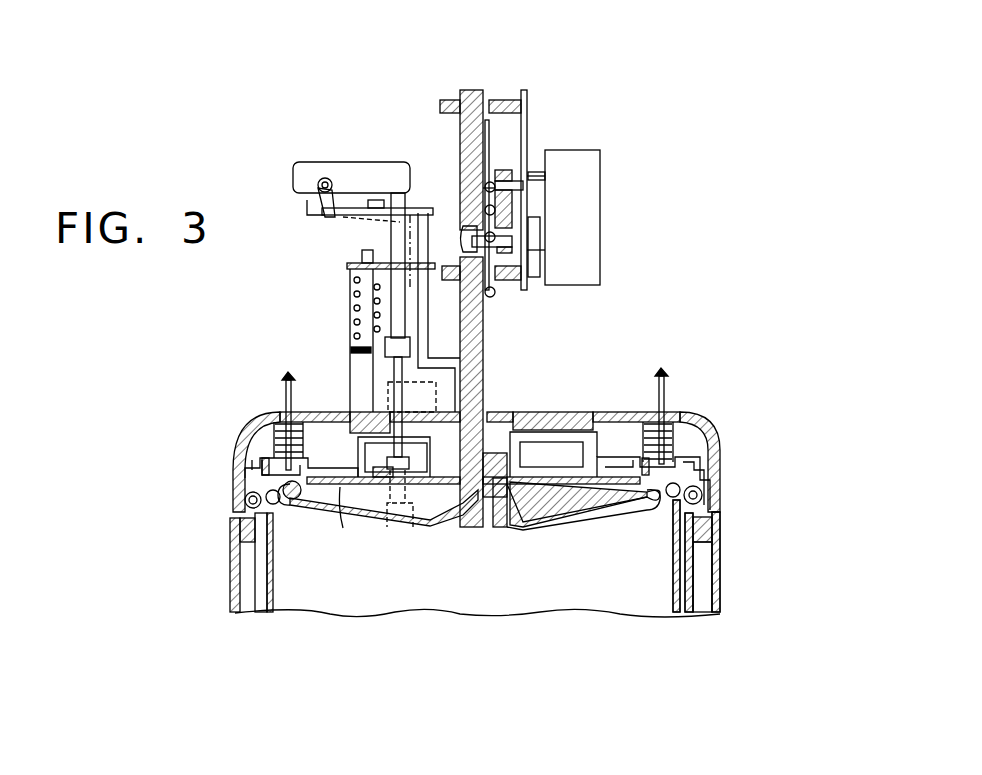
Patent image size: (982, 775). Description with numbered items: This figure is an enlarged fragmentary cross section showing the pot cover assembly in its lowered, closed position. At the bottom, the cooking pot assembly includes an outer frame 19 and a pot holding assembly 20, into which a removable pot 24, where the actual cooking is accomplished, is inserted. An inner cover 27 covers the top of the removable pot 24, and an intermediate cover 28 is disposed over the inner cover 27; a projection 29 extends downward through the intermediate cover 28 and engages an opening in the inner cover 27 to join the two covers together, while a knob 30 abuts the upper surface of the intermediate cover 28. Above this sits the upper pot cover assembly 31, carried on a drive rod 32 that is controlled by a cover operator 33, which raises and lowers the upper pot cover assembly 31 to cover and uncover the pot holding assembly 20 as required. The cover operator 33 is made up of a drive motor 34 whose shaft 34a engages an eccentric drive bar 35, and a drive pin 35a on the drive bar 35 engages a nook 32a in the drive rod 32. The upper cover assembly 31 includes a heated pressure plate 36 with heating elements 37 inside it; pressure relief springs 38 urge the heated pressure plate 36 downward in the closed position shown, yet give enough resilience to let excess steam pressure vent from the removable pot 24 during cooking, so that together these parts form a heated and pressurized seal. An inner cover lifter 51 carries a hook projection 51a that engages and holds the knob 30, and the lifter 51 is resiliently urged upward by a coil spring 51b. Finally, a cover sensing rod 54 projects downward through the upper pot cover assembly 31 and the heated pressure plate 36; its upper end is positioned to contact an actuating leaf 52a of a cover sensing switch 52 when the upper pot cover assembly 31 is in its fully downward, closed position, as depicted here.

The outer frame 19 is at (722, 588).
The pot holding assembly 20 is at (705, 597).
The removable pot 24 is at (672, 578).
The inner cover 27 is at (585, 522).
The intermediate cover 28 is at (346, 508).
The projection 29 is at (678, 425).
The knob 30 is at (495, 418).
The upper pot cover assembly 31 is at (722, 440).
The drive rod 32 is at (500, 320).
The nook 32a is at (463, 236).
The cover operator 33 is at (478, 108).
The drive motor 34 is at (598, 204).
The shaft 34a is at (525, 172).
The eccentric drive bar 35 is at (508, 168).
The drive pin 35a is at (470, 192).
The heated pressure plate 36 is at (245, 462).
The heating elements 37 is at (600, 440).
The pressure relief springs 38 is at (255, 437).
The inner cover lifter 51 is at (392, 280).
The hook projection 51a is at (432, 503).
The coil spring 51b is at (355, 318).
The cover sensing switch 52 is at (317, 162).
The actuating leaf 52a is at (372, 214).
The cover sensing rod 54 is at (428, 322).